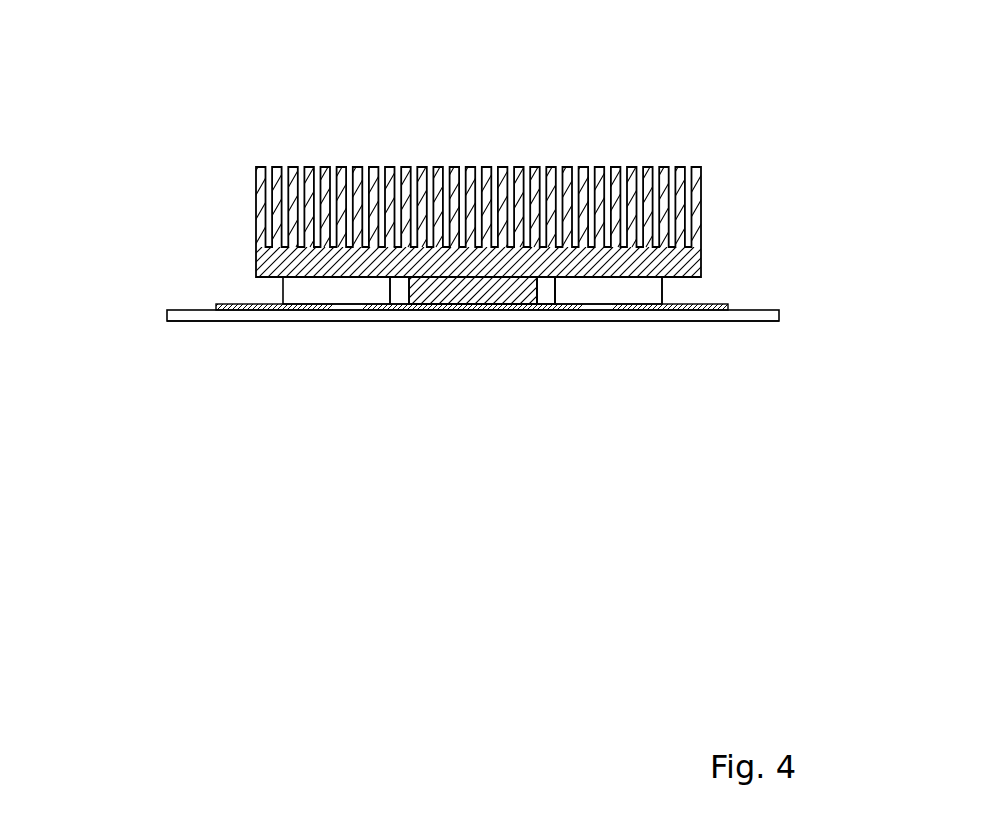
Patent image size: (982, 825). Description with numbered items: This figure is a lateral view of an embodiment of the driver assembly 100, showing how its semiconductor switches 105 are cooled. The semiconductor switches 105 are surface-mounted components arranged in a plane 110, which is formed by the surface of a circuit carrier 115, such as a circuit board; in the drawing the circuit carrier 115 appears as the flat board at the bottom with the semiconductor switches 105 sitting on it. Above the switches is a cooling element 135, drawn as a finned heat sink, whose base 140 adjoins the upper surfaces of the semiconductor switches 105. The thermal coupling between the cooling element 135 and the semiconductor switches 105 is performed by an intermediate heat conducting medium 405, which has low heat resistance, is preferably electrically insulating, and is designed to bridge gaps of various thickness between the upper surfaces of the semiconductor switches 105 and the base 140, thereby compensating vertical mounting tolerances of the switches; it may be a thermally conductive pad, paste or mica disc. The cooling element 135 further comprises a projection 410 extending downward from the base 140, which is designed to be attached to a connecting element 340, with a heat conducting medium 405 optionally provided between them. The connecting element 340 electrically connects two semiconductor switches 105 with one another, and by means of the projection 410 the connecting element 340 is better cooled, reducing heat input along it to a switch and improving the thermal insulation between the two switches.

The driver assembly 100 is at (357, 147).
The semiconductor switches 105 is at (305, 302).
The plane 110 is at (168, 303).
The circuit carrier 115 is at (445, 321).
The cooling element 135 is at (700, 188).
The base 140 is at (252, 275).
The connecting element 340 is at (227, 305).
The heat conducting medium 405 is at (666, 282).
The projection 410 is at (547, 297).